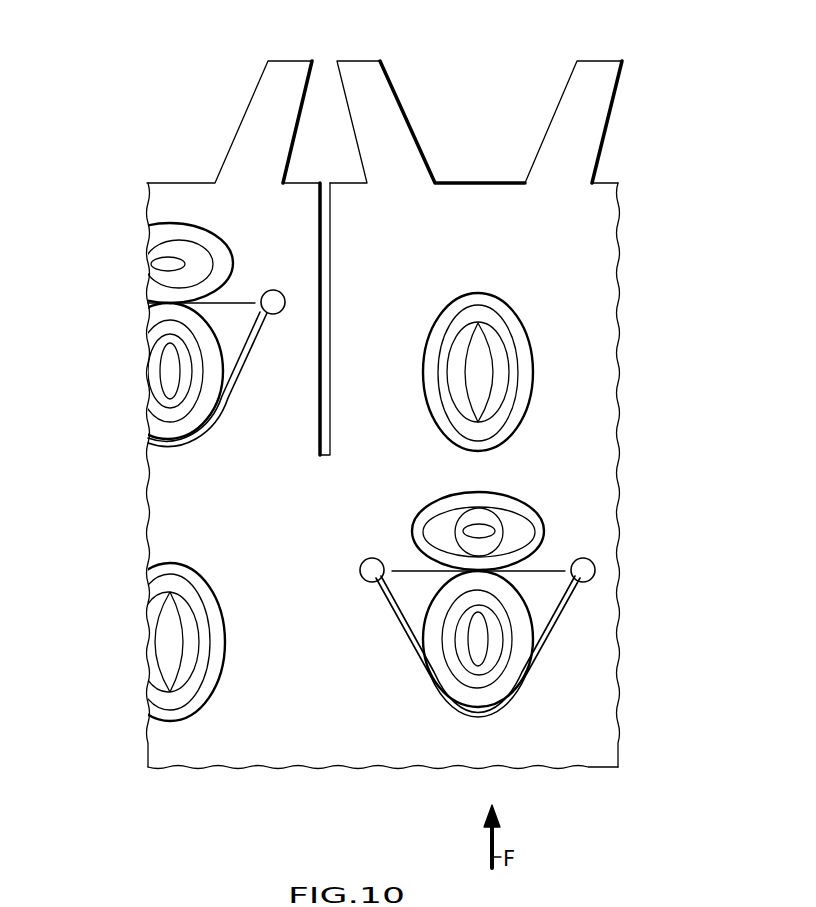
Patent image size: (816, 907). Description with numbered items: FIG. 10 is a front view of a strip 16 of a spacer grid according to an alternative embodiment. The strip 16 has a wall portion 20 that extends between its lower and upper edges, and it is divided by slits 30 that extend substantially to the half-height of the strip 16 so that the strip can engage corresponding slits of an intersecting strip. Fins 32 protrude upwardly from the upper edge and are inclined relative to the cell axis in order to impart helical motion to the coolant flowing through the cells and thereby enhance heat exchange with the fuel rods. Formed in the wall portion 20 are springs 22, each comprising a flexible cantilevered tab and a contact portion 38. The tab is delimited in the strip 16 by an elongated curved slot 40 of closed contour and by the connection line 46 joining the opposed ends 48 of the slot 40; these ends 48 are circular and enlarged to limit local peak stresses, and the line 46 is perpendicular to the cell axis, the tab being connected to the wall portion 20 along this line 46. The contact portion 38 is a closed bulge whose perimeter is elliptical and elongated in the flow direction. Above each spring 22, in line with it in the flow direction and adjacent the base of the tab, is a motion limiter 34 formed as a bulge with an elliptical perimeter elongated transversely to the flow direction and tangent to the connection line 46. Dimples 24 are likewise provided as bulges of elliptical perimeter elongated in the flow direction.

The strip 16 is at (480, 82).
The wall portion 20 is at (270, 753).
The spring 22 is at (351, 479).
The dimple 24 is at (540, 312).
The slit 30 is at (323, 212).
The fin 32 is at (352, 70).
The motion limiter 34 is at (176, 200).
The contact portion 38 is at (146, 398).
The slot 40 is at (167, 445).
The connection line 46 is at (243, 302).
The end of slot 48 is at (278, 297).